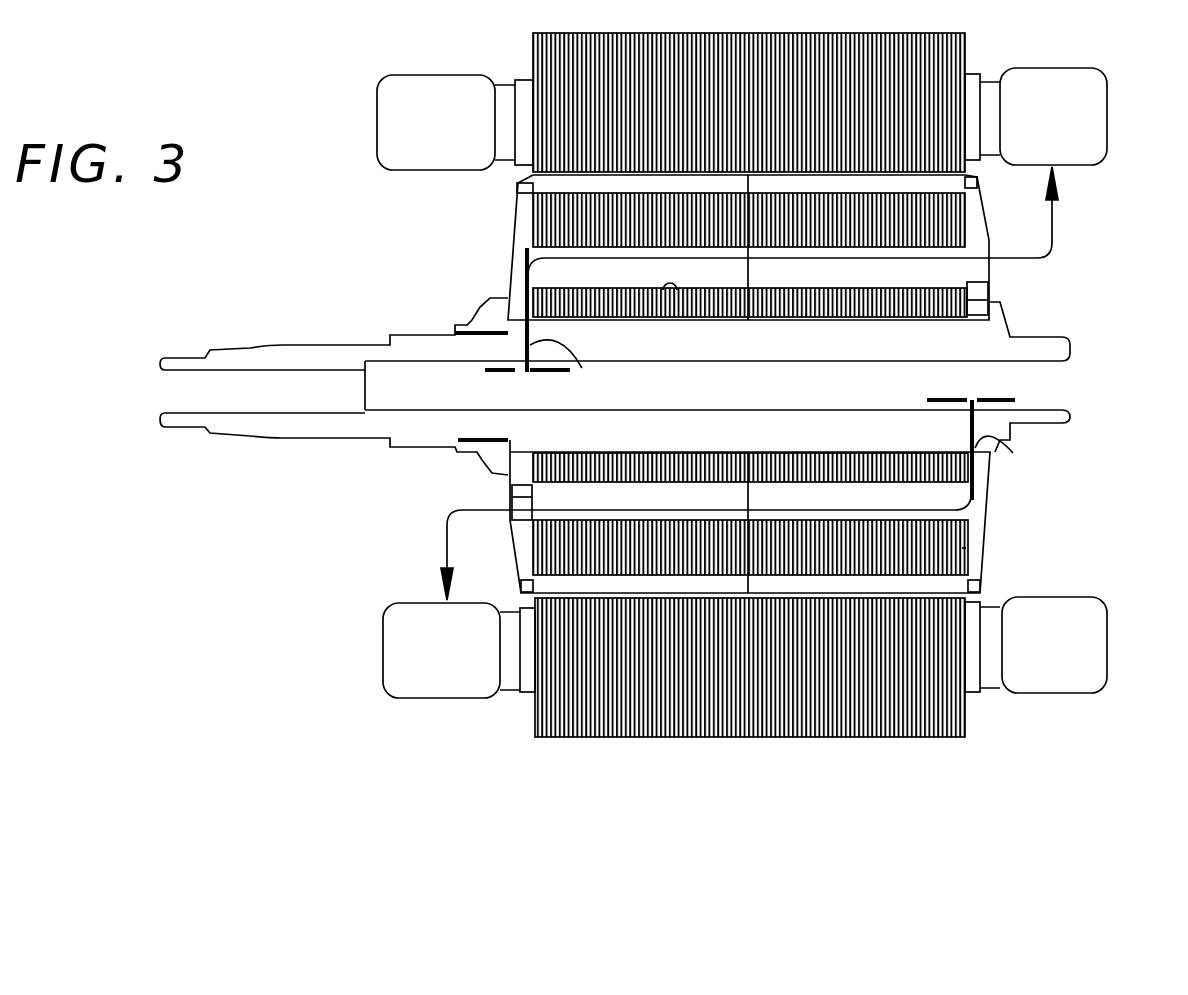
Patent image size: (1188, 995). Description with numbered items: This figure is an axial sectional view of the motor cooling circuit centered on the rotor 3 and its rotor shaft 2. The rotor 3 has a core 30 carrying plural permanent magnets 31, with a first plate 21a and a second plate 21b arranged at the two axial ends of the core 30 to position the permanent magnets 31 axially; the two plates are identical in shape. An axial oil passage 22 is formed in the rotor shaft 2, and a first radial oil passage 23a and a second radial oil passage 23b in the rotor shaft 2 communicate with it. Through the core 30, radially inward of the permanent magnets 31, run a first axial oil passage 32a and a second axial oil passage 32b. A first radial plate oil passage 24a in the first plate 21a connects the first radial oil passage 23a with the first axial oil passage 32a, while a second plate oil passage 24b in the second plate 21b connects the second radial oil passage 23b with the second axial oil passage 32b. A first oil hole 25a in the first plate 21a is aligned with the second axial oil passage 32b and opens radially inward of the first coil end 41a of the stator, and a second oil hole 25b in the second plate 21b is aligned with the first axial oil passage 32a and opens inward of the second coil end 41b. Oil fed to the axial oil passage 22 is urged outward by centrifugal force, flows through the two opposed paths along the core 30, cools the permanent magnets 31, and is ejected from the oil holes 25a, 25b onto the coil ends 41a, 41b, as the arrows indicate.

The rotor shaft 2 is at (335, 358).
The rotor 3 is at (696, 247).
The first plate 21a is at (516, 252).
The second plate 21b is at (982, 527).
The axial oil passage 22 is at (470, 403).
The first radial oil passage 23a is at (584, 371).
The second radial oil passage 23b is at (1028, 454).
The first radial plate oil passage 24a is at (527, 297).
The second plate oil passage 24b is at (985, 497).
The first oil hole 25a is at (520, 500).
The second oil hole 25b is at (980, 277).
The core 30 is at (962, 548).
The permanent magnets 31 is at (533, 186).
The first axial oil passage 32a is at (678, 292).
The second axial oil passage 32b is at (858, 480).
The first coil end 41a is at (410, 615).
The second coil end 41b is at (1095, 138).